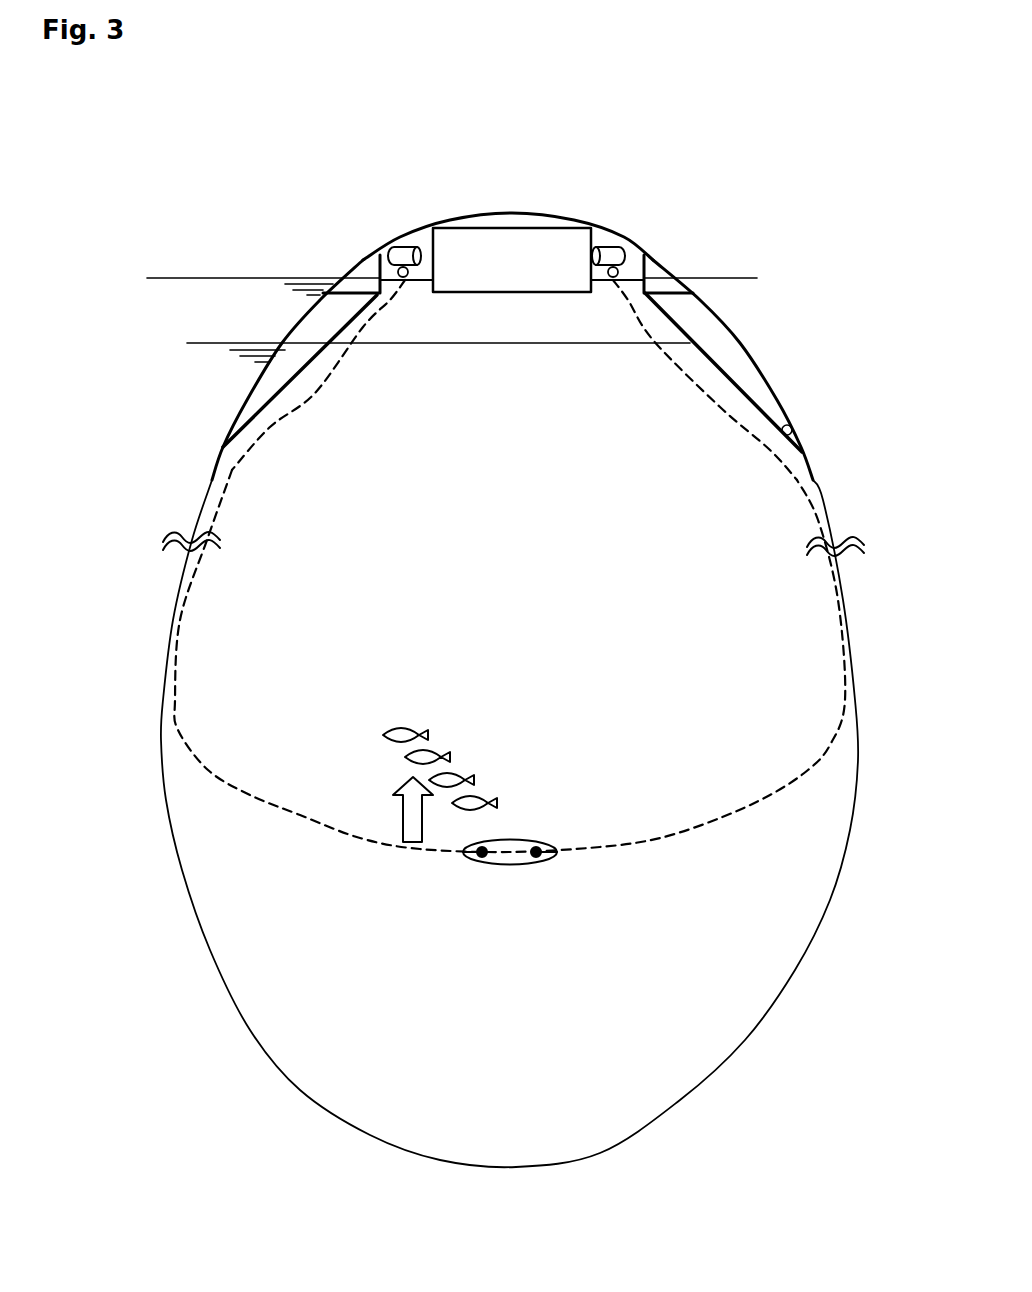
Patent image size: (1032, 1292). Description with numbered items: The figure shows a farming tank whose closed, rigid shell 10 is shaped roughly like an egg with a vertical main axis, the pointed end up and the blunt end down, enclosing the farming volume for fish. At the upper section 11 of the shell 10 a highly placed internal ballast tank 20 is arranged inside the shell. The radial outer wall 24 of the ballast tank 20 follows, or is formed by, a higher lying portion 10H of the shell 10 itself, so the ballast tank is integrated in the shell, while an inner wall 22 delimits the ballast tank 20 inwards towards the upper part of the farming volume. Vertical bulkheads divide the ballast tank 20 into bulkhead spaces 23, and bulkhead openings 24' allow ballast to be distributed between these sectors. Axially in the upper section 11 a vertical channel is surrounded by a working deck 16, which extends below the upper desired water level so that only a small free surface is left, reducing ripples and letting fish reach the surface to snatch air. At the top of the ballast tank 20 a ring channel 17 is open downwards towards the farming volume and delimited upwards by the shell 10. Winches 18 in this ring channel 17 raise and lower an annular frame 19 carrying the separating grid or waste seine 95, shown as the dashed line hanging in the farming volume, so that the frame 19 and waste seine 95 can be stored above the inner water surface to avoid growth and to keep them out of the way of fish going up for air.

The shell 10 is at (150, 607).
The higher lying portion of the shell 10H is at (248, 388).
The upper section of the shell 11 is at (360, 192).
The working deck 16 is at (547, 247).
The ring channel 17 is at (425, 280).
The winches 18 is at (506, 256).
The annular frame 19 is at (514, 373).
The ballast tank 20 is at (290, 355).
The wall 22 is at (267, 410).
The bulkhead spaces 23 is at (768, 403).
The outer wall 24 is at (404, 323).
The bulkhead openings 24' is at (856, 385).
The waste seine 95 is at (807, 745).